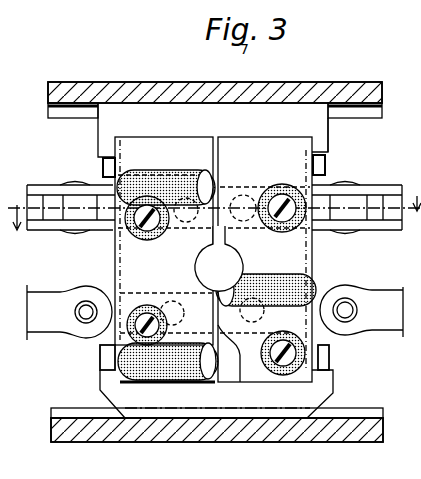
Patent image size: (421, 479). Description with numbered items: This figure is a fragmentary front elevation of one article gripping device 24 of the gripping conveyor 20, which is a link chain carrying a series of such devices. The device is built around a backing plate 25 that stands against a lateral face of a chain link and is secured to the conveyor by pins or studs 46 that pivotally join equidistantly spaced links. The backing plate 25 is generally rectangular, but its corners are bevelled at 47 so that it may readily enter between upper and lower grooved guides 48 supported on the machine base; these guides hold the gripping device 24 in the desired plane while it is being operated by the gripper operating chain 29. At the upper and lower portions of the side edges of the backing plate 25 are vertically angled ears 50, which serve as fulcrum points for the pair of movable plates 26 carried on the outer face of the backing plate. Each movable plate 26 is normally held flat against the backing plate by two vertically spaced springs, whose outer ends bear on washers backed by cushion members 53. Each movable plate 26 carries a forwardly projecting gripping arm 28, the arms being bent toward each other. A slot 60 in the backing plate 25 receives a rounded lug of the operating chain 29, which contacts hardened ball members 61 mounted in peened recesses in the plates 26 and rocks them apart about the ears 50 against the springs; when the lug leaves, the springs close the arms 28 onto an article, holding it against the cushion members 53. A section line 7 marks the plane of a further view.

The section line 7 is at (214, 212).
The gripping conveyor 20 is at (379, 283).
The gripping device 24 is at (340, 155).
The backing plate 25 is at (265, 122).
The movable plate 26 is at (120, 266).
The gripping arm 28 is at (120, 380).
The gripper operating chain 29 is at (344, 204).
The pin 46 is at (149, 305).
The bevelled corner 47 is at (326, 409).
The grooved guide 48 is at (330, 96).
The ear 50 is at (103, 172).
The cushion member 53 is at (270, 228).
The slot 60 is at (219, 258).
The ball member 61 is at (229, 200).